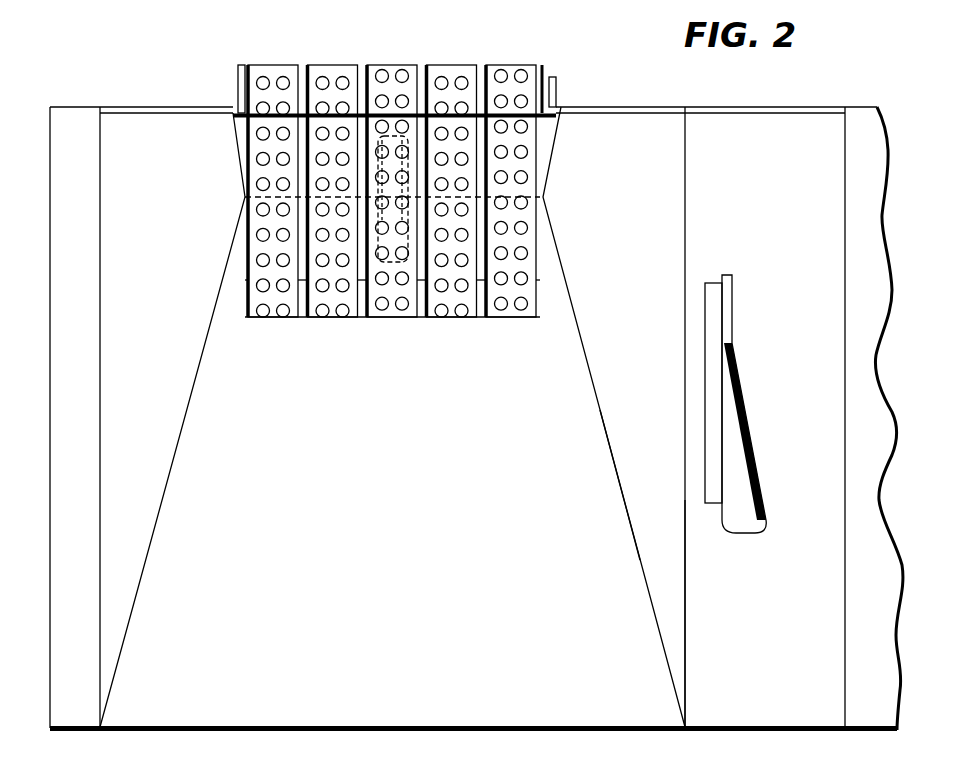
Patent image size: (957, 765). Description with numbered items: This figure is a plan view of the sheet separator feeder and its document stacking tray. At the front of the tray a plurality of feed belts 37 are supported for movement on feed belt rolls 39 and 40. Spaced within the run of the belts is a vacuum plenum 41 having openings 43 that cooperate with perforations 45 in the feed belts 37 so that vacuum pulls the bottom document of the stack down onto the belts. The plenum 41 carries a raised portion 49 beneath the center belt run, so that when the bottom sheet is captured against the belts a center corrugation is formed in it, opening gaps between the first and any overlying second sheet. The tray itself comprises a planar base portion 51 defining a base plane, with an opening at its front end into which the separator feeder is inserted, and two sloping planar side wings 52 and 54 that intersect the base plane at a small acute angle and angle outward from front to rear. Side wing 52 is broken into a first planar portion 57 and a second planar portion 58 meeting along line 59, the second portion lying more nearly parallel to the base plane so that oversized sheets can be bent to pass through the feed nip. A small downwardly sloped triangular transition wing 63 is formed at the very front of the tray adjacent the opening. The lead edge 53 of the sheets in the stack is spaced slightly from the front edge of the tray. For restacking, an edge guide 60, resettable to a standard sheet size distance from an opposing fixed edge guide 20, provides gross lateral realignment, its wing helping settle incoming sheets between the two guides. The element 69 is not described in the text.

The fixed edge guide 20 is at (95, 272).
The feed belts 37 is at (445, 320).
The feed belt roll 39 is at (243, 310).
The feed belt roll 40 is at (238, 105).
The vacuum plenum 41 is at (545, 256).
The openings 43 is at (530, 204).
The perforations 45 is at (520, 277).
The raised portion 49 is at (525, 148).
The planar base portion 51 is at (586, 510).
The sloping planar side wing 52 is at (685, 560).
The lead edge 53 is at (650, 118).
The sloping planar side wing 54 is at (178, 405).
The first planar portion 57 is at (612, 397).
The second planar portion 58 is at (825, 224).
The intersection line 59 is at (685, 182).
The edge guide 60 is at (735, 442).
The transition wing 63 is at (553, 113).
The upper support rail 69 is at (233, 110).